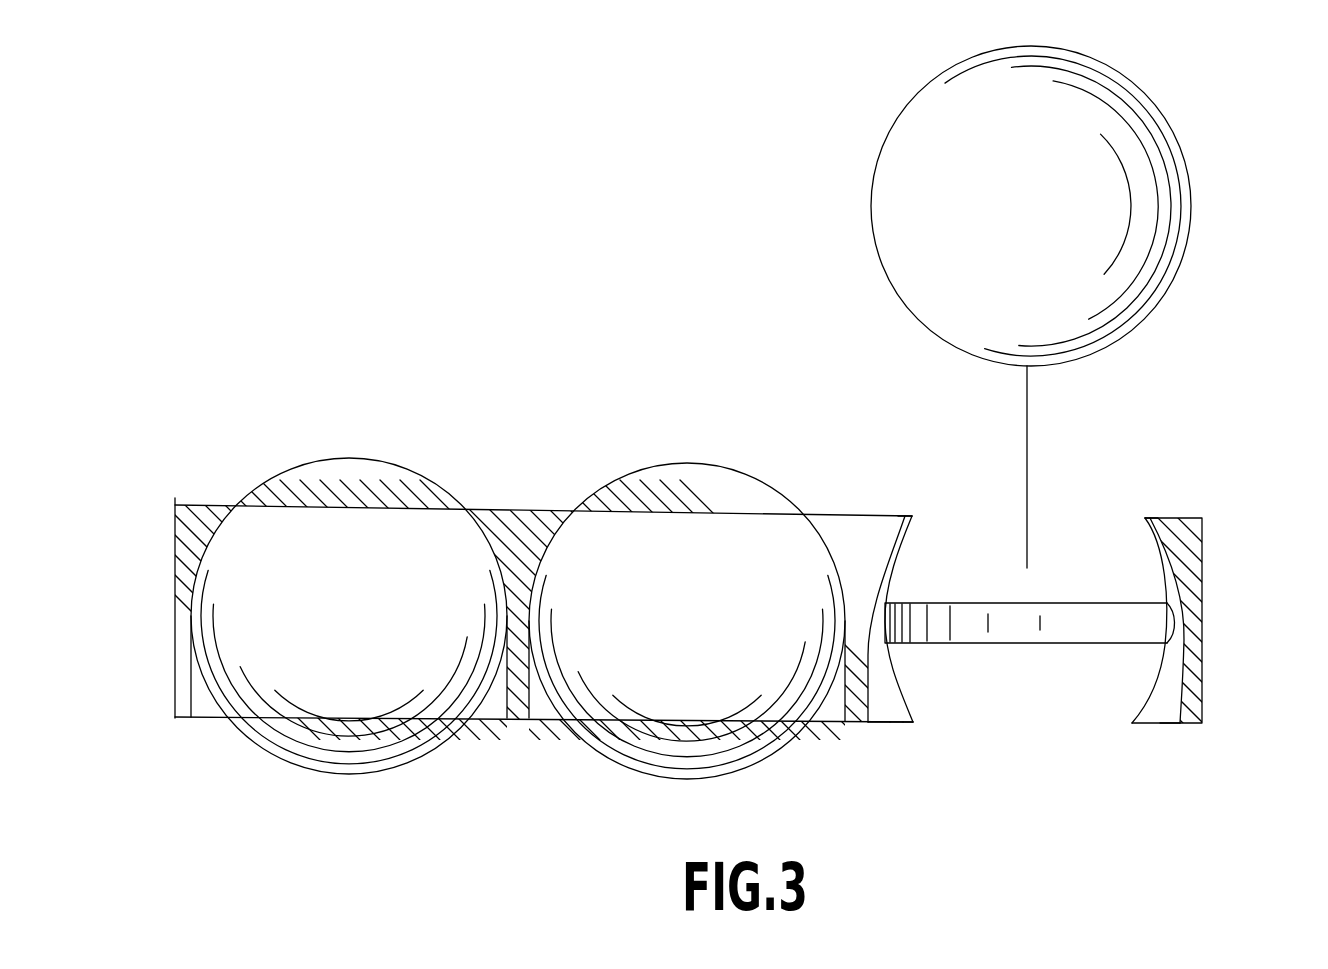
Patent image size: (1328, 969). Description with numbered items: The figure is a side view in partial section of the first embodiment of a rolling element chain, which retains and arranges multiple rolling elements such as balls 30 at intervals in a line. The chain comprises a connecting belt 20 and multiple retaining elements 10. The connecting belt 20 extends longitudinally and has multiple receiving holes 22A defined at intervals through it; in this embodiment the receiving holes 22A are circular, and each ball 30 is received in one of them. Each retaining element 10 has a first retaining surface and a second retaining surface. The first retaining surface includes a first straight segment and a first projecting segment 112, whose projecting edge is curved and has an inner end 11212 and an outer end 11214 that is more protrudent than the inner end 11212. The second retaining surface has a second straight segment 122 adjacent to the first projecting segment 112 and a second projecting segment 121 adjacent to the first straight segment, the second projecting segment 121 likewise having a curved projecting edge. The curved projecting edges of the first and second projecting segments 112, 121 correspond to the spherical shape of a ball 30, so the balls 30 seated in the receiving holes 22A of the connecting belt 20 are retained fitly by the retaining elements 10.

The retaining element 10 is at (482, 532).
The connecting belt 20 is at (949, 594).
The receiving hole 22A is at (1178, 607).
The ball 30 is at (897, 183).
The first projecting segment 112 is at (902, 703).
The second projecting segment 121 is at (912, 518).
The second straight segment 122 is at (888, 723).
The inner end 11212 is at (902, 723).
The outer end 11214 is at (913, 723).